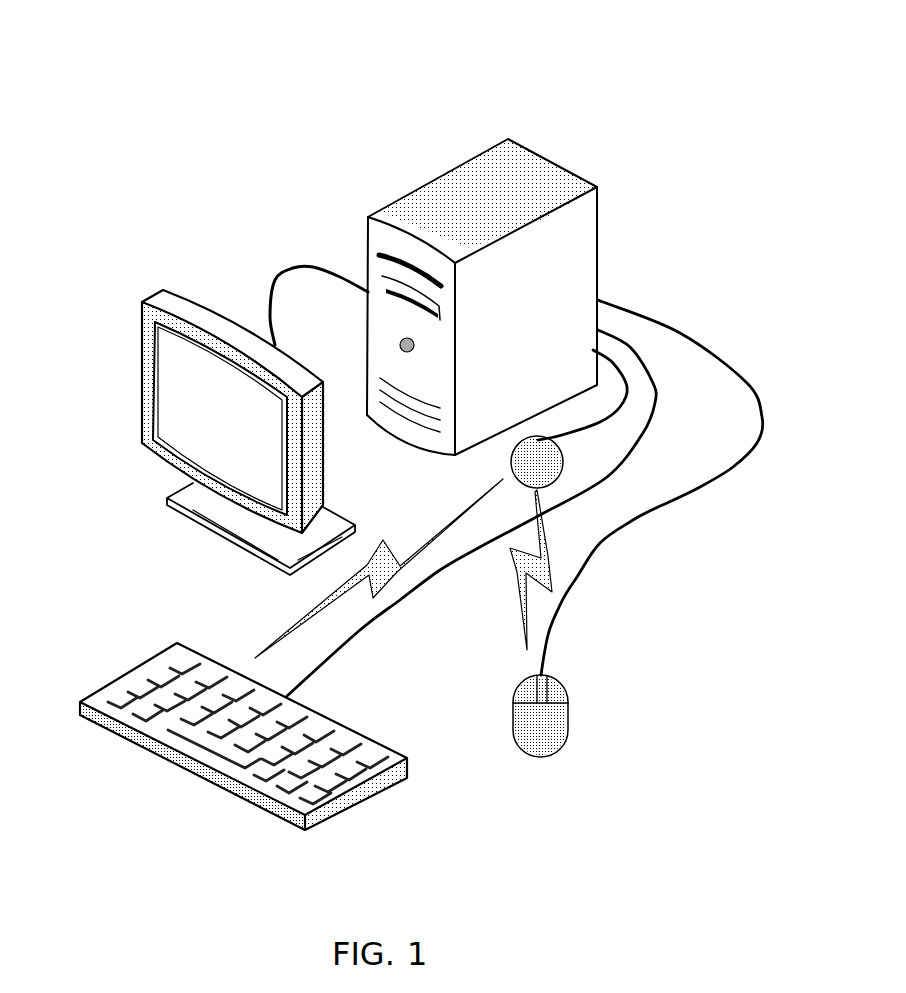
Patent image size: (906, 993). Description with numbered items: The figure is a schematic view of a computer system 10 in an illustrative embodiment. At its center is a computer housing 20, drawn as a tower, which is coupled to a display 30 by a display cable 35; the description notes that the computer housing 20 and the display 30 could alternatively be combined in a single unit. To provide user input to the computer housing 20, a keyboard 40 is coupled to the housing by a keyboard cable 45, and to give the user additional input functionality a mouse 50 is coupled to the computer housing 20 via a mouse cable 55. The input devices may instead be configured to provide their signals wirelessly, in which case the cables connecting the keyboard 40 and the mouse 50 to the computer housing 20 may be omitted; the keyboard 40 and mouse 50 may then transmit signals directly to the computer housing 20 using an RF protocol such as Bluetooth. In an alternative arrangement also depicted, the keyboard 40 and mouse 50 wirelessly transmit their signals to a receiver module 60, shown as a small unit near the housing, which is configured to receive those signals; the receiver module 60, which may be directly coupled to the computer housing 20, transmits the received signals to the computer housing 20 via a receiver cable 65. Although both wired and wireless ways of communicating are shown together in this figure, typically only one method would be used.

The computer system 10 is at (452, 70).
The computer housing 20 is at (598, 220).
The display 30 is at (142, 417).
The display cable 35 is at (295, 264).
The keyboard 40 is at (213, 787).
The keyboard cable 45 is at (623, 470).
The mouse 50 is at (547, 758).
The mouse cable 55 is at (627, 523).
The receiver module 60 is at (511, 462).
The receiver cable 65 is at (627, 393).